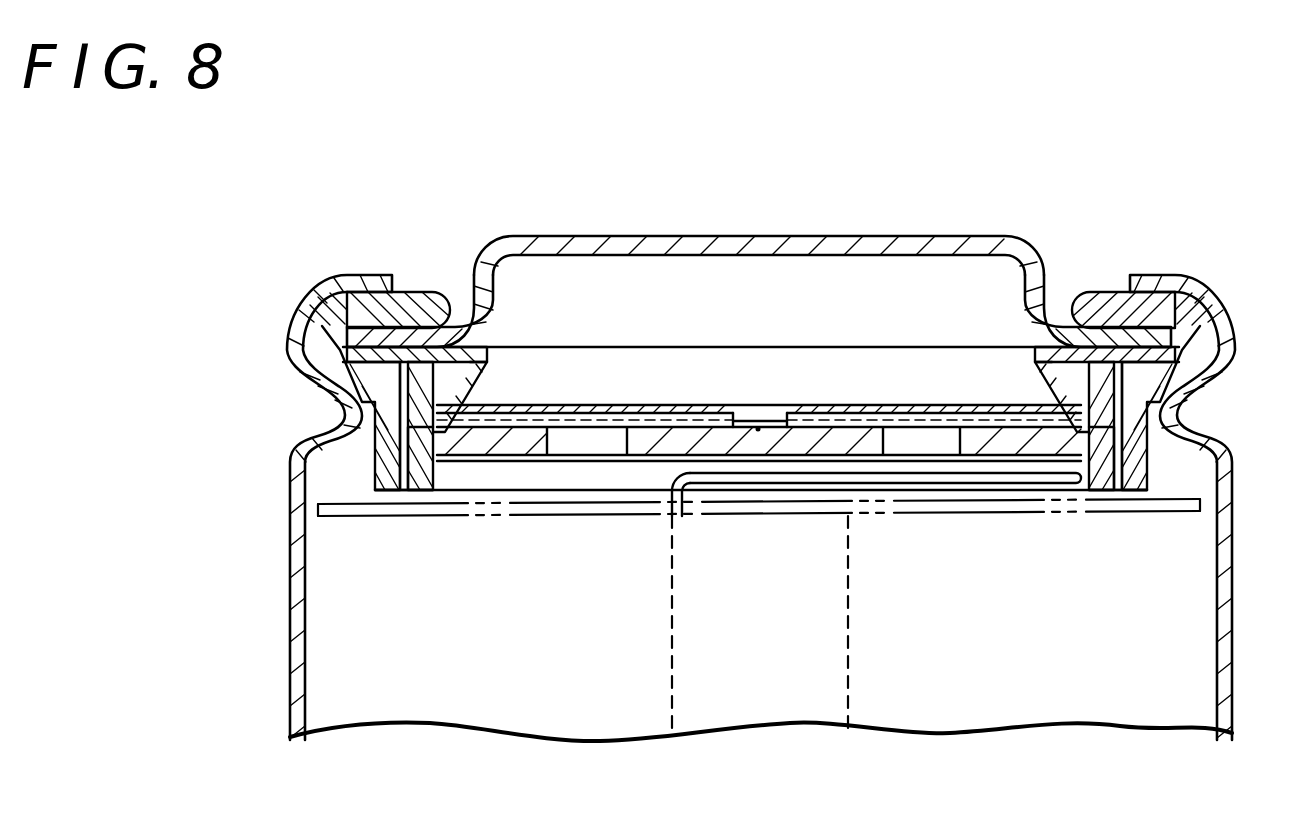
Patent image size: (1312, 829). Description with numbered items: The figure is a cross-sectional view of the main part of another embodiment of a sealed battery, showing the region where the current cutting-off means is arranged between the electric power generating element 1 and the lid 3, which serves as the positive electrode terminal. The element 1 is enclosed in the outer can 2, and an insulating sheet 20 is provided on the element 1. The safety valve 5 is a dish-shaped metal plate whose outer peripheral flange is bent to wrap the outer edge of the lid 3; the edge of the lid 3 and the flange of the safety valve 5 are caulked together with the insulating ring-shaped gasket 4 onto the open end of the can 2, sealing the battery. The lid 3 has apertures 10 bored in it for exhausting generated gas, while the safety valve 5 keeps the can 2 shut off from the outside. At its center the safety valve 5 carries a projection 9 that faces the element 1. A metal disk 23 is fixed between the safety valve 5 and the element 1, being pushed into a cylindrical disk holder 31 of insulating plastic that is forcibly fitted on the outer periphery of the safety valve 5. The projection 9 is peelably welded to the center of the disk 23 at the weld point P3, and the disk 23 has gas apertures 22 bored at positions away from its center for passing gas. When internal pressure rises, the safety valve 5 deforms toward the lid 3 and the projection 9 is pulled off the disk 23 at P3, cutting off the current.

The electric power generating element 1 is at (1197, 621).
The outer can 2 is at (1236, 574).
The lid 3 is at (842, 236).
The insulating ring-shaped gasket 4 is at (1200, 340).
The safety valve 5 is at (838, 412).
The projection 9 is at (781, 413).
The apertures 10 is at (488, 262).
The insulating sheet 20 is at (368, 512).
The gas apertures 22 is at (578, 437).
The disk 23 is at (1087, 442).
The cylindrical disk holder 31 is at (1092, 405).
The weld point P3 is at (758, 430).